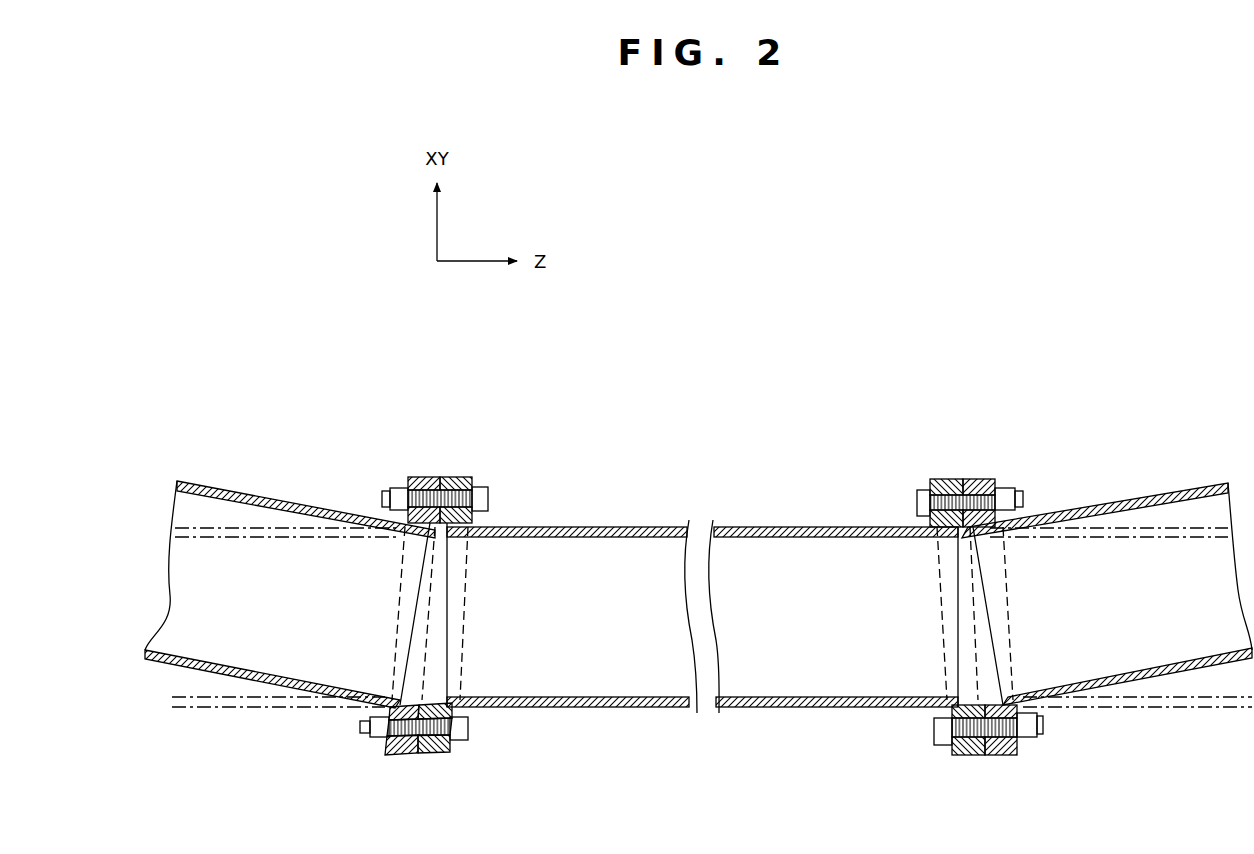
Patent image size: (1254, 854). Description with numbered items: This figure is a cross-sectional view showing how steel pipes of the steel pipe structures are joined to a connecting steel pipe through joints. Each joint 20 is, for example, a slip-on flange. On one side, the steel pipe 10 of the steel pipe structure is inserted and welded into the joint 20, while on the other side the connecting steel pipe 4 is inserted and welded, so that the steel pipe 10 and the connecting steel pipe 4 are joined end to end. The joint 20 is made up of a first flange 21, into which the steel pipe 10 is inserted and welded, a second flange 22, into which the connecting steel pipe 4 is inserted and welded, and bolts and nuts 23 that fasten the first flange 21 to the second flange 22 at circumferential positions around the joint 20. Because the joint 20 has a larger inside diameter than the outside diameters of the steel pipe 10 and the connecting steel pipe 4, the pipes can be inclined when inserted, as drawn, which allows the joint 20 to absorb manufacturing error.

The connecting steel pipe 4 is at (645, 525).
The steel pipe 10 is at (260, 678).
The joint 20 is at (378, 382).
The first flange 21 is at (418, 478).
The second flange 22 is at (452, 478).
The bolts and nuts 23 is at (487, 485).